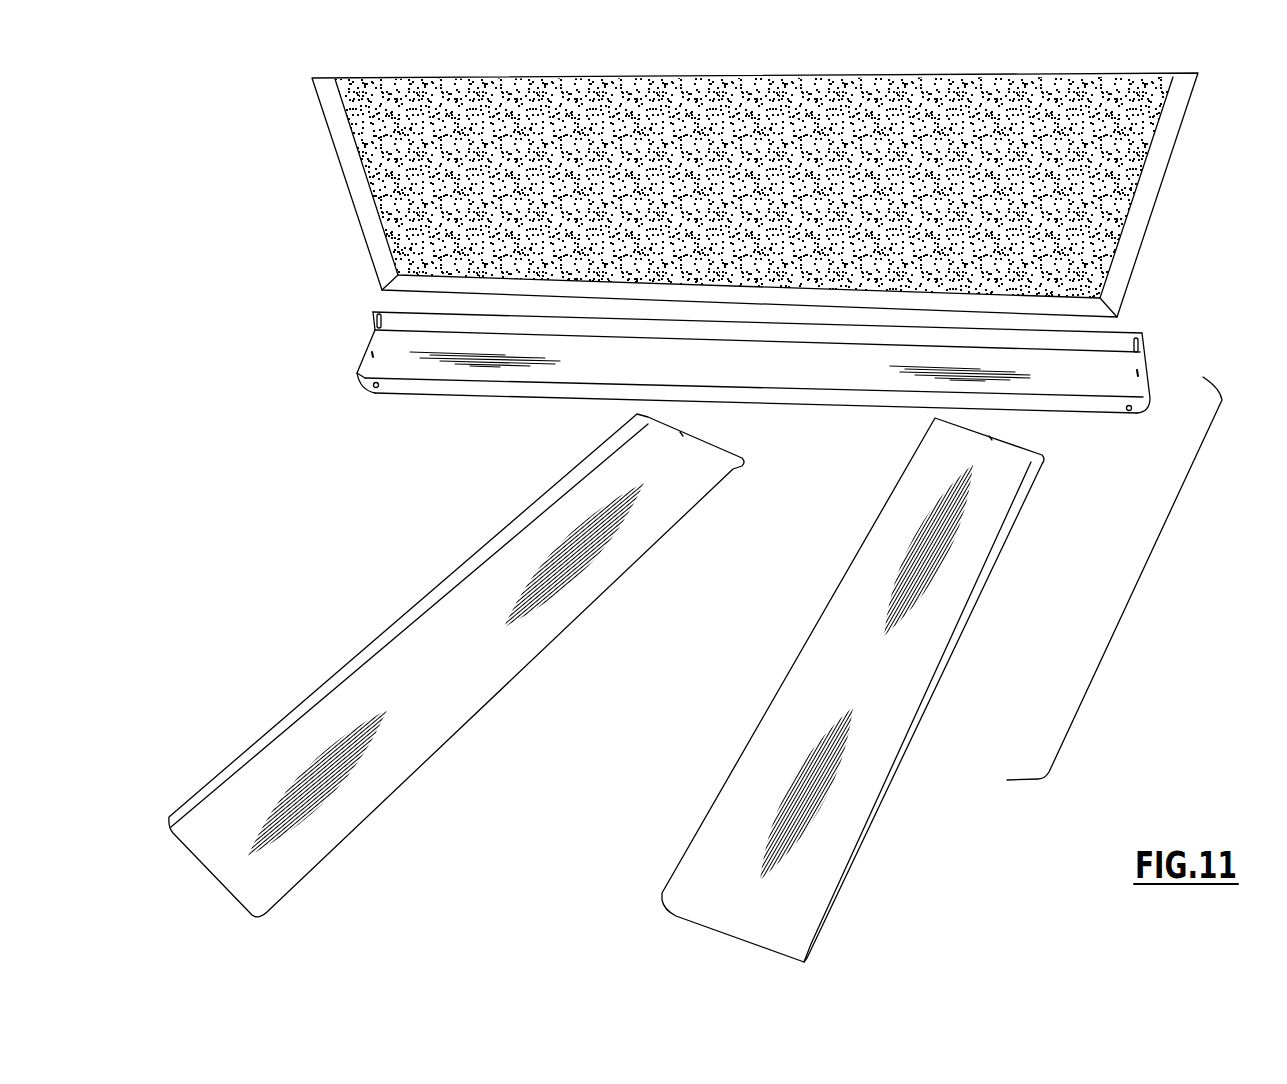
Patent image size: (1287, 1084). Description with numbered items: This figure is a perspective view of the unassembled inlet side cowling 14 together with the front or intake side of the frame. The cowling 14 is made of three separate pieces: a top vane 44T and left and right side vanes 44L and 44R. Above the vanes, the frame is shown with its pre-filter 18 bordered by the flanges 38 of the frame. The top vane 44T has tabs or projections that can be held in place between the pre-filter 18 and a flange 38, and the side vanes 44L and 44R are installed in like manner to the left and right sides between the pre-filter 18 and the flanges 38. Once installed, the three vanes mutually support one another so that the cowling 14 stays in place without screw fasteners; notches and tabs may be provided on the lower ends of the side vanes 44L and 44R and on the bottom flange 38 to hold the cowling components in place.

The pre-filter 18 is at (886, 115).
The flange 38 is at (432, 285).
The top vane 44T is at (555, 370).
The left side vane 44L is at (440, 592).
The right side vane 44R is at (911, 649).
The cowling 14 is at (1137, 584).